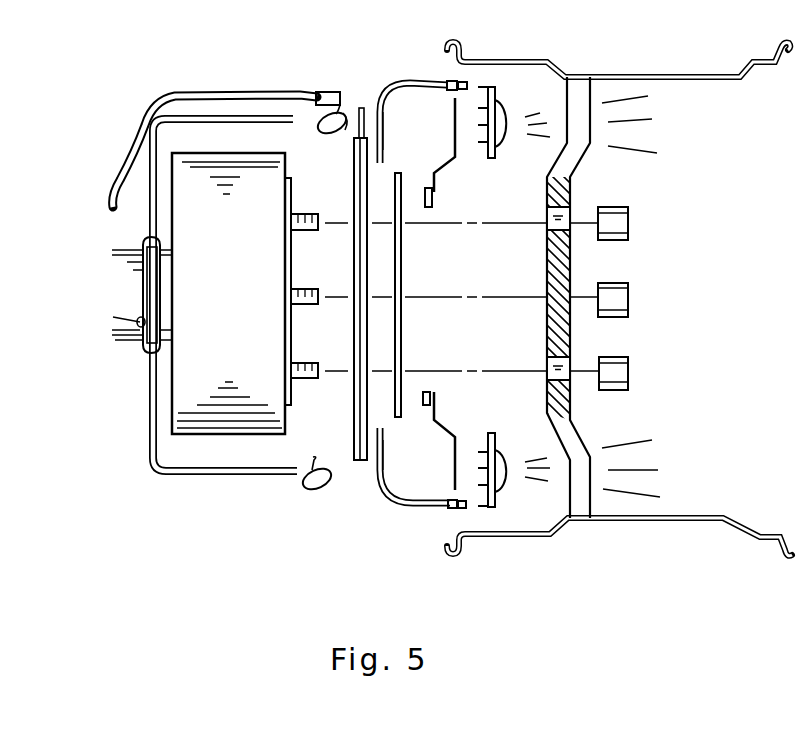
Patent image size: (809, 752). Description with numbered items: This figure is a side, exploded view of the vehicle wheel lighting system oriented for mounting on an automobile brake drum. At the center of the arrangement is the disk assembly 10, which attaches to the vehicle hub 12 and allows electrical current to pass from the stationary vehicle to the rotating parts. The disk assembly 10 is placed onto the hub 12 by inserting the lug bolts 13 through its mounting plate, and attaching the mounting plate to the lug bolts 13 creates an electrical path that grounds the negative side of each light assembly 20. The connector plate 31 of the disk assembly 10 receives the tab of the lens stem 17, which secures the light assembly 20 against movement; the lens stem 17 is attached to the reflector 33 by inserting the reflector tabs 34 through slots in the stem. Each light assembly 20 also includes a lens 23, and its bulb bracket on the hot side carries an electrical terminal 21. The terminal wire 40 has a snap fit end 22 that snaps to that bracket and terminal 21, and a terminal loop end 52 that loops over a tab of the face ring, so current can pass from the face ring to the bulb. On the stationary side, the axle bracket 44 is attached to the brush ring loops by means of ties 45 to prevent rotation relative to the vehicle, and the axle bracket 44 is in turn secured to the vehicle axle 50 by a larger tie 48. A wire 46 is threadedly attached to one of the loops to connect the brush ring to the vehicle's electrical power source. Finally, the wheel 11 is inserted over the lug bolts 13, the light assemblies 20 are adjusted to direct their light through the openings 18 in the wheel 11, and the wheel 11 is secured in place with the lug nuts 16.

The disk assembly 10 is at (361, 105).
The wheel 11 is at (688, 73).
The hub 12 is at (203, 365).
The lug bolts 13 is at (304, 231).
The lug nuts 16 is at (628, 222).
The lens stem 17 is at (436, 170).
The openings 18 is at (583, 98).
The light assembly 20 is at (510, 151).
The electrical terminal 21 is at (495, 64).
The snap fit end 22 is at (452, 80).
The lens 23 is at (505, 112).
The connector plate 31 is at (400, 173).
The reflector 33 is at (489, 160).
The reflector tabs 34 is at (476, 142).
The terminal wire 40 is at (417, 80).
The axle bracket 44 is at (213, 116).
The wire 46 is at (252, 93).
The ties 45 is at (318, 113).
The larger tie 48 is at (140, 303).
The vehicle axle 50 is at (117, 270).
The terminal loop end 52 is at (378, 147).